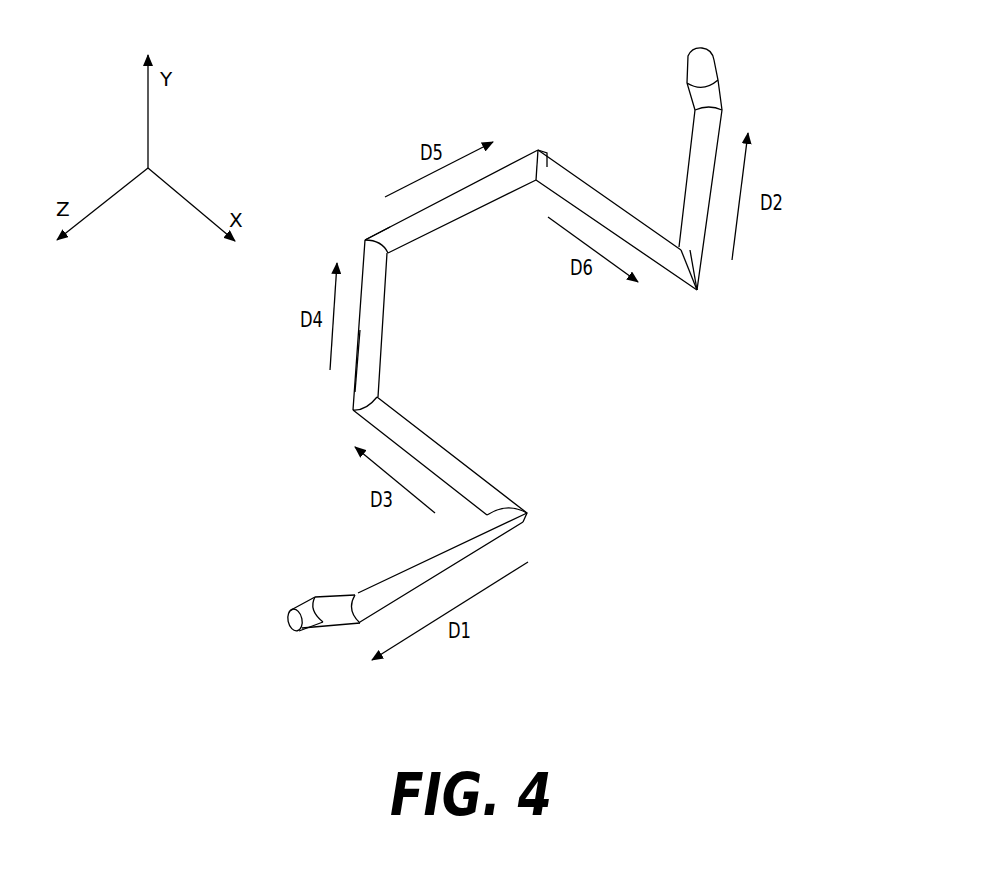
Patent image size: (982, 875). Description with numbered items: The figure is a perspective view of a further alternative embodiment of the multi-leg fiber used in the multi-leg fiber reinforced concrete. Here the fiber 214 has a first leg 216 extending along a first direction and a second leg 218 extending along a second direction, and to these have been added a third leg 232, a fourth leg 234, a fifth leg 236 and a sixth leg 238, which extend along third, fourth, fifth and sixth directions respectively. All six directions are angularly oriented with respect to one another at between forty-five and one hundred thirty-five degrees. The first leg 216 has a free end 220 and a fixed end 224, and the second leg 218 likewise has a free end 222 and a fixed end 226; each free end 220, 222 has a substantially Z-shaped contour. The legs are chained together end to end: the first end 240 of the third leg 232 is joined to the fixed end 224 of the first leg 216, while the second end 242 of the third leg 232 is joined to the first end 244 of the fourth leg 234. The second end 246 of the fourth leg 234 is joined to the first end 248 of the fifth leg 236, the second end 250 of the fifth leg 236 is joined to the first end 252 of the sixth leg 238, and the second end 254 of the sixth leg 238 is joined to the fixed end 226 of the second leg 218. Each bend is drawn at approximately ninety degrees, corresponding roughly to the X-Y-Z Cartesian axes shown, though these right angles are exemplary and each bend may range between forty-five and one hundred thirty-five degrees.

The fiber 214 is at (528, 371).
The first leg 216 is at (370, 588).
The second leg 218 is at (690, 143).
The free end 220 is at (312, 627).
The free end 222 is at (700, 63).
The fixed end 224 is at (507, 535).
The fixed end 226 is at (702, 277).
The third leg 232 is at (433, 443).
The fourth leg 234 is at (385, 320).
The fifth leg 236 is at (468, 203).
The sixth leg 238 is at (585, 190).
The first end 240 is at (500, 492).
The second end 242 is at (373, 422).
The first end 244 is at (358, 392).
The second end 246 is at (361, 260).
The first end 248 is at (380, 233).
The second end 250 is at (520, 167).
The first end 252 is at (548, 157).
The second end 254 is at (663, 273).